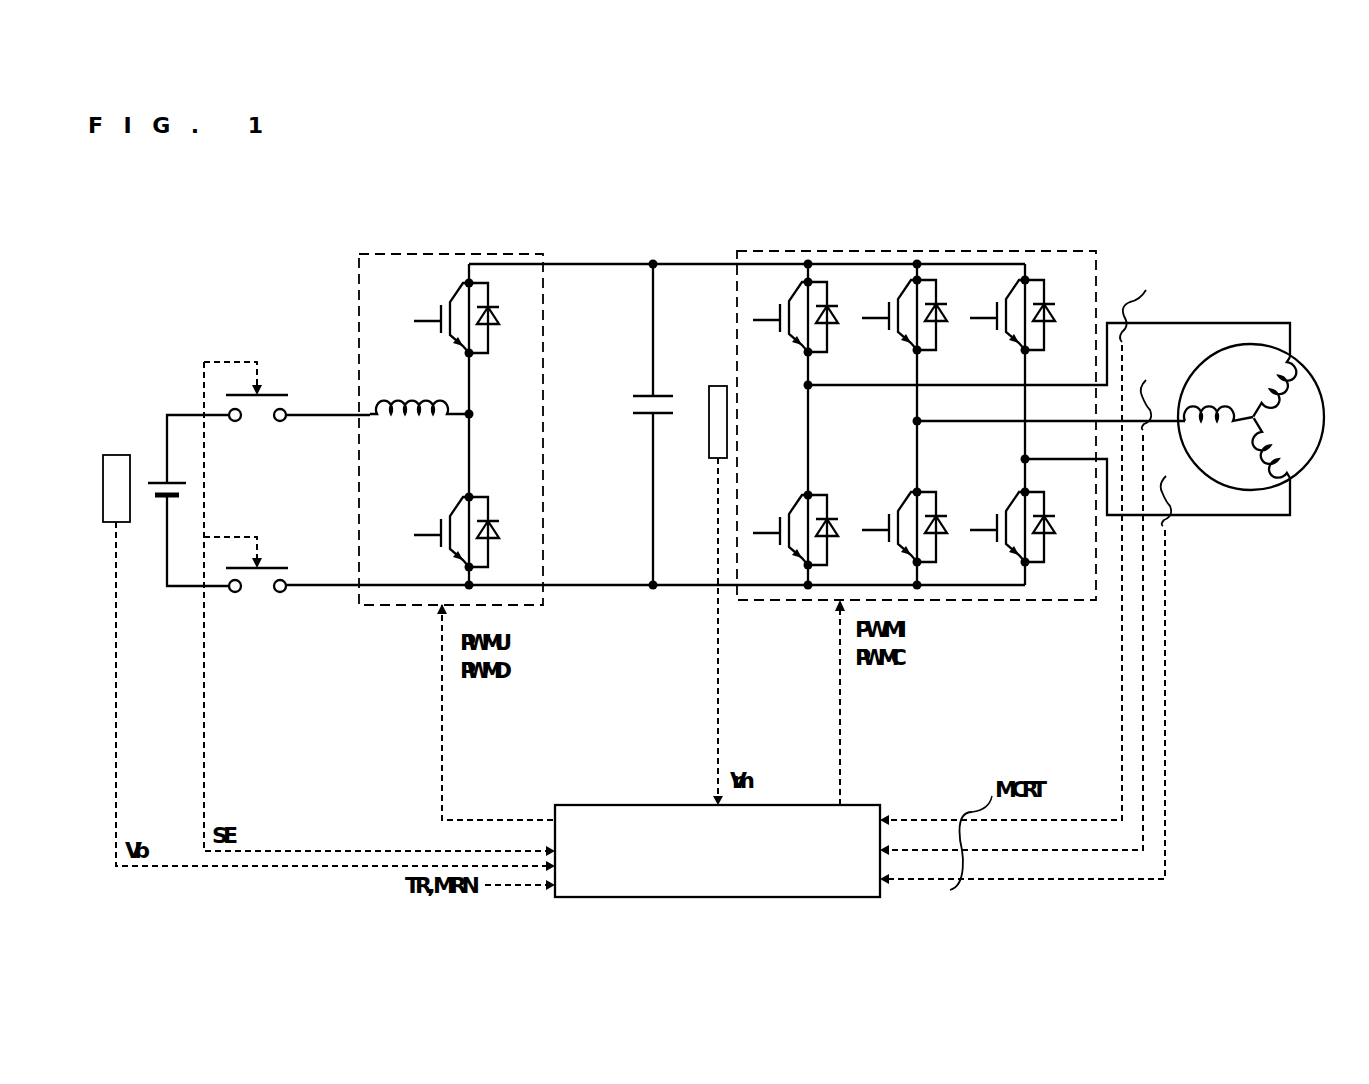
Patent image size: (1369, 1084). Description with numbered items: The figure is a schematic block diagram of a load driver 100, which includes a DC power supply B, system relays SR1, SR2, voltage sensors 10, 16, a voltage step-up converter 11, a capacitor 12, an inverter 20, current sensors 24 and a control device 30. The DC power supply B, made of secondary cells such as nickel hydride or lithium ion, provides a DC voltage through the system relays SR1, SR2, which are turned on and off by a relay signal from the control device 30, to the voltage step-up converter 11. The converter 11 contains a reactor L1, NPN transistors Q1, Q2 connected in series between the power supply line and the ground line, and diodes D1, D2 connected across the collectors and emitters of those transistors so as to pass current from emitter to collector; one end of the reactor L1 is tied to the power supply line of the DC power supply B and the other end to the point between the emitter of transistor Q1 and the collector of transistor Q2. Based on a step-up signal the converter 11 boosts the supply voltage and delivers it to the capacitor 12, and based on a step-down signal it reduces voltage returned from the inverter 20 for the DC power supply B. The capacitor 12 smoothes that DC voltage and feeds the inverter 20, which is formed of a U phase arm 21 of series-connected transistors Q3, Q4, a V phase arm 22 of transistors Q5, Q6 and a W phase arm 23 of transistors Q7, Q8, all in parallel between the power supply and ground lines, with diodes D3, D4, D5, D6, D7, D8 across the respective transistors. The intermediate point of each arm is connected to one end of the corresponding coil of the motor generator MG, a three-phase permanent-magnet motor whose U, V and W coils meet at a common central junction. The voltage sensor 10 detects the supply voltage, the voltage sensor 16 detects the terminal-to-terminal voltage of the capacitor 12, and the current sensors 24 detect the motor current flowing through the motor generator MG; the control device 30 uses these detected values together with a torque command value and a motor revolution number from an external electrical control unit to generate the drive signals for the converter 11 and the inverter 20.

The voltage sensor 10 is at (108, 455).
The voltage step-up converter 11 is at (445, 252).
The capacitor 12 is at (636, 394).
The voltage sensor 16 is at (712, 386).
The inverter 20 is at (1046, 251).
The U phase arm 21 is at (787, 391).
The V phase arm 22 is at (897, 432).
The W phase arm 23 is at (1005, 464).
The current sensors 24 is at (1029, 575).
The control device 30 is at (636, 805).
The load driver 100 is at (833, 207).
The DC power supply B is at (161, 474).
The system relay SR1 is at (258, 422).
The system relay SR2 is at (258, 593).
The reactor L1 is at (419, 393).
The NPN transistor Q1 is at (443, 318).
The NPN transistor Q2 is at (443, 532).
The NPN transistor Q3 is at (781, 317).
The NPN transistor Q4 is at (781, 530).
The NPN transistor Q5 is at (890, 315).
The NPN transistor Q6 is at (890, 527).
The NPN transistor Q7 is at (1000, 315).
The NPN transistor Q8 is at (1000, 527).
The diode D1 is at (494, 324).
The diode D2 is at (494, 537).
The diode D3 is at (833, 322).
The diode D4 is at (833, 532).
The diode D5 is at (943, 320).
The diode D6 is at (943, 531).
The diode D7 is at (1053, 320).
The diode D8 is at (1053, 531).
The motor generator MG is at (1305, 368).